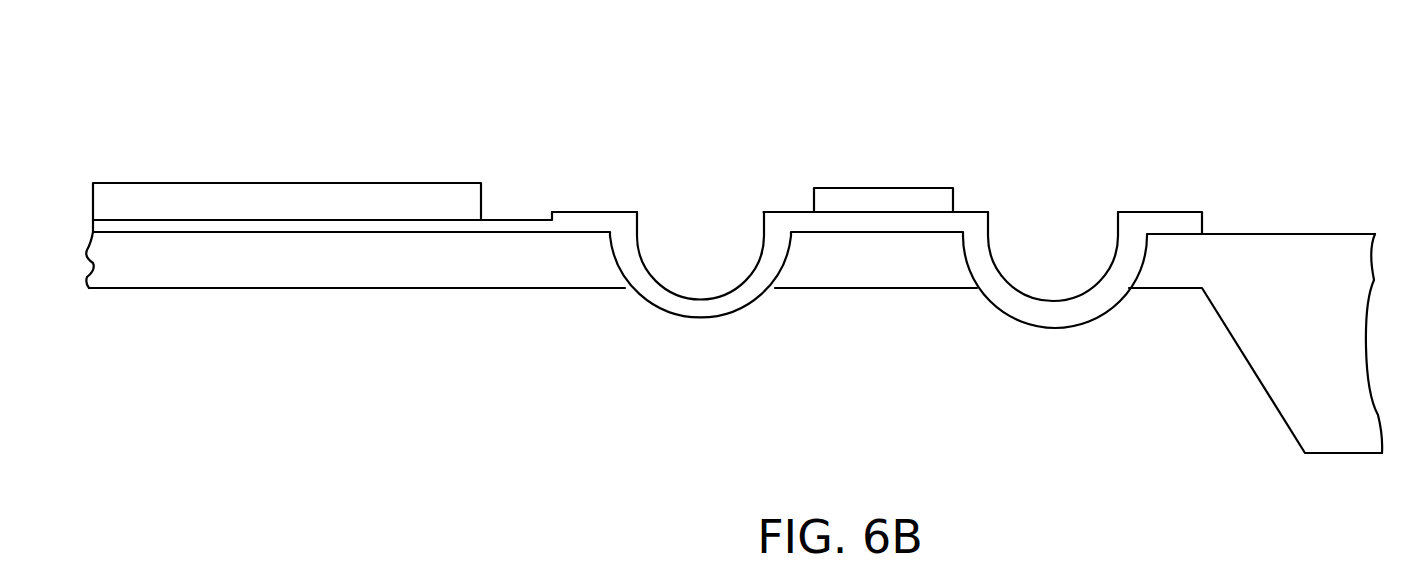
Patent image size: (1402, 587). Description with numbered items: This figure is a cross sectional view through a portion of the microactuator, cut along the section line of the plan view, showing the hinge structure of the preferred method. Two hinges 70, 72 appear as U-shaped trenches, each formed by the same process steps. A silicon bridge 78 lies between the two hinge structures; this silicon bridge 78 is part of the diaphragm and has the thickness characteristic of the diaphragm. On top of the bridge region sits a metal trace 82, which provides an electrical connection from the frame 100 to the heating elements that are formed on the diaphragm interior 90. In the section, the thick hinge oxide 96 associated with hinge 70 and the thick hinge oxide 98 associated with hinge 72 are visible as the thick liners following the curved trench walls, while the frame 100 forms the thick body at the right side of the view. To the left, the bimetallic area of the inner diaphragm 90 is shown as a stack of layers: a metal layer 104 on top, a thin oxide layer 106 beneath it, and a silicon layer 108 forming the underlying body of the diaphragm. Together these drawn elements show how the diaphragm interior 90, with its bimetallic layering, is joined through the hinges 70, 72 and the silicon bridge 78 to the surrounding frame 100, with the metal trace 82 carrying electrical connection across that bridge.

The hinge 70 is at (698, 212).
The hinge 72 is at (1066, 204).
The silicon bridge 78 is at (855, 54).
The metal trace 82 is at (892, 212).
The diaphragm interior 90 is at (359, 106).
The thick hinge oxide 96 is at (707, 313).
The thick hinge oxide 98 is at (1053, 315).
The frame 100 is at (1277, 356).
The metal layer 104 is at (198, 200).
The thin oxide layer 106 is at (93, 229).
The silicon layer 108 is at (480, 280).